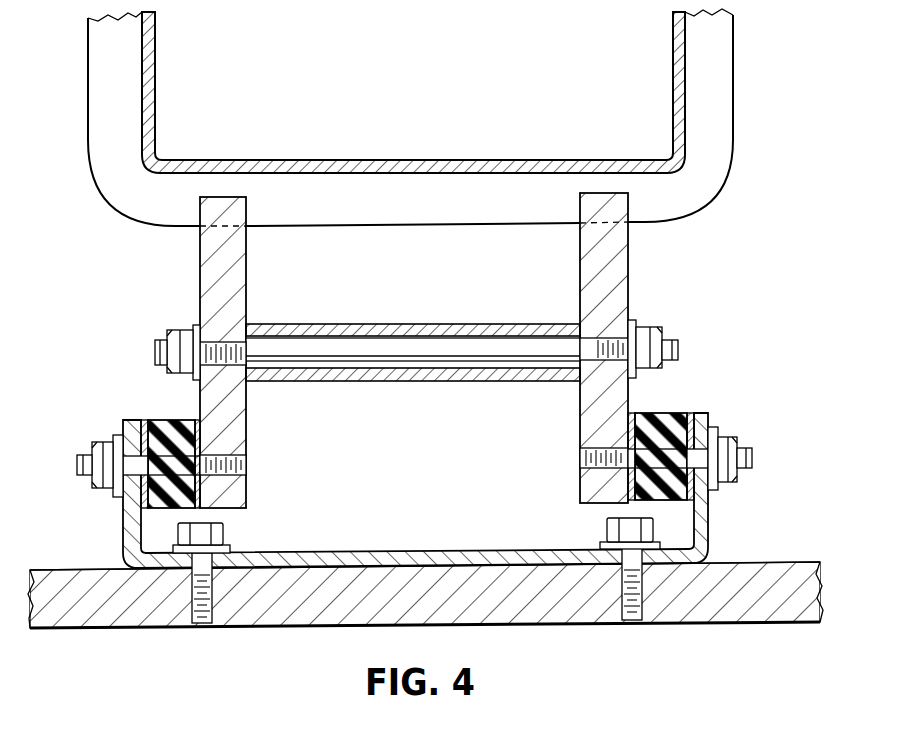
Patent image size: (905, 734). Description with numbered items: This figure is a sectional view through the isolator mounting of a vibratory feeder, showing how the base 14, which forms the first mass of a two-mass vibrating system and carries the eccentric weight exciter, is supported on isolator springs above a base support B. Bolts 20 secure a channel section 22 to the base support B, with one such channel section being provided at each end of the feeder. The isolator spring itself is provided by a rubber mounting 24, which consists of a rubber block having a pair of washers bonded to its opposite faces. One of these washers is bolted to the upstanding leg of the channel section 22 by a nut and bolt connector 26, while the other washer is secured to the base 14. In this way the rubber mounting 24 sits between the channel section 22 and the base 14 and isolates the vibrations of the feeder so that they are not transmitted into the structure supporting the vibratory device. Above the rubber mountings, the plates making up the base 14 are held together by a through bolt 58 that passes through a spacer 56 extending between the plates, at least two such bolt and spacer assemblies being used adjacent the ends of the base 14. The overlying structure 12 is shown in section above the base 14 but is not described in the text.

The tank shell 12 is at (462, 160).
The base 14 is at (208, 280).
The bolts 20 is at (223, 532).
The channel section 22 is at (703, 518).
The rubber mounting 24 is at (165, 420).
The nut and bolt connector 26 is at (105, 443).
The spacer 56 is at (366, 327).
The through bolt 58 is at (450, 345).
The base support B is at (770, 565).